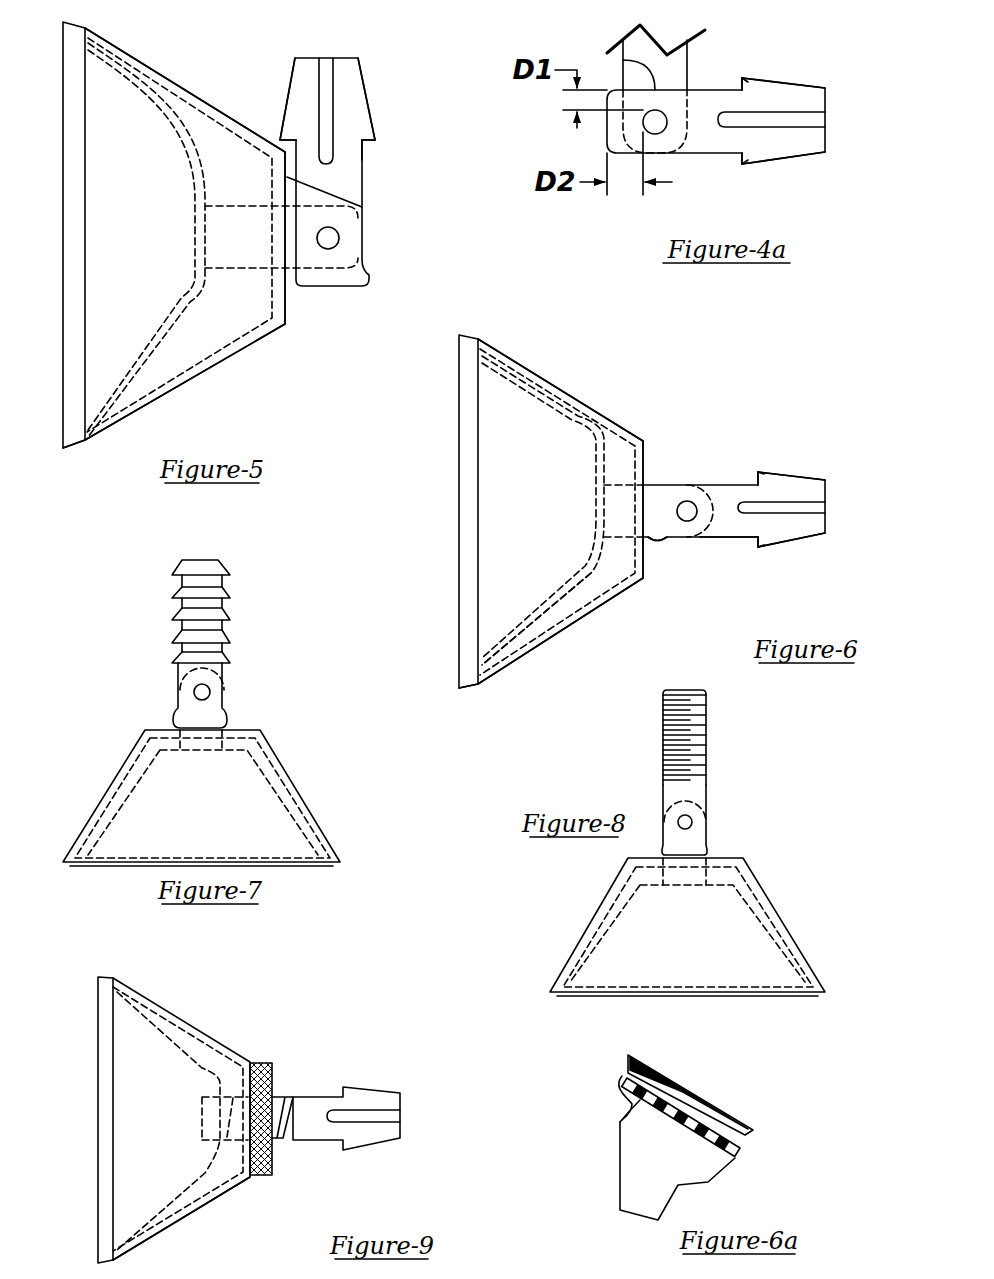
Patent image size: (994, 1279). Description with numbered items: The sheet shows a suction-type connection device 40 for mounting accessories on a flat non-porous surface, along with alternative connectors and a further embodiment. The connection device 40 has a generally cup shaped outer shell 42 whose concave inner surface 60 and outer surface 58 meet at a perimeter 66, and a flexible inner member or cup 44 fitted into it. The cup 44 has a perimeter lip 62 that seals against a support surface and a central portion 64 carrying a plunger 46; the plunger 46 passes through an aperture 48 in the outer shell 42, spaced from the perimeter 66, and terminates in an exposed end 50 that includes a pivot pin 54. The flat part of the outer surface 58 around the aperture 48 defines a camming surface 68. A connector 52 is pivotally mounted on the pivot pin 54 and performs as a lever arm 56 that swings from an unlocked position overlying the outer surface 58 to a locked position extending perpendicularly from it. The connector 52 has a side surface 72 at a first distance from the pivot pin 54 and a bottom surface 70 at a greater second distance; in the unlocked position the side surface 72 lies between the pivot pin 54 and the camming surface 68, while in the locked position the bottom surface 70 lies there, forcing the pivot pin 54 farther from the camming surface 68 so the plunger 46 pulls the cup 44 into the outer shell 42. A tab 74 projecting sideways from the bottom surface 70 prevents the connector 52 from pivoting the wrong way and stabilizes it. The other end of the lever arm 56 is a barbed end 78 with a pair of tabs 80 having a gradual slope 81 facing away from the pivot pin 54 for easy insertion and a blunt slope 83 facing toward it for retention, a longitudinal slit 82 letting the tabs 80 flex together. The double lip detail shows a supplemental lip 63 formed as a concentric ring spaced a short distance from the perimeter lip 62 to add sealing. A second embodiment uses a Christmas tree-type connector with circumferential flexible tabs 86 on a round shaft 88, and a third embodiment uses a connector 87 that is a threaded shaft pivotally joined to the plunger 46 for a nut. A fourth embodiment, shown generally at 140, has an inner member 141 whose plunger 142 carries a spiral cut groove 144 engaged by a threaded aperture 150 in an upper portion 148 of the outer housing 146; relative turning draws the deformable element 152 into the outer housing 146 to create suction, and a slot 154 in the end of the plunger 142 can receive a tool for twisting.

In FIG. 5, the connection device 40 is at (279, 405).
In FIG. 5, the outer shell 42 is at (169, 71).
In FIG. 6, the outer shell 42 is at (574, 391).
In FIG. 5, the flexible inner member or cup 44 is at (78, 295).
In FIG. 6, the flexible inner member or cup 44 is at (469, 533).
In FIG. 6A, the flexible inner member or cup 44 is at (706, 1160).
In FIG. 6, the plunger 46 is at (616, 484).
In FIG. 8, the plunger 46 is at (692, 863).
In FIG. 5, the aperture 48 is at (279, 287).
In FIG. 6, the aperture 48 is at (643, 442).
In FIG. 6, the exposed end 50 is at (706, 484).
In FIG. 5, the connector 52 is at (366, 195).
In FIG. 4A, the connector 52 is at (707, 124).
In FIG. 6, the connector 52 is at (728, 541).
In FIG. 5, the pivot pin 54 is at (343, 238).
In FIG. 6, the pivot pin 54 is at (680, 510).
In FIG. 6, the lever arm 56 is at (718, 538).
In FIG. 5, the outer surface 58 is at (189, 388).
In FIG. 6, the outer surface 58 is at (587, 617).
In FIG. 6A, the outer surface 58 is at (673, 1078).
In FIG. 6, the concave inner surface 60 is at (578, 413).
In FIG. 6A, the concave inner surface 60 is at (736, 1152).
In FIG. 5, the perimeter lip 62 is at (63, 448).
In FIG. 6, the perimeter lip 62 is at (462, 687).
In FIG. 6A, the perimeter lip 62 is at (620, 1079).
In FIG. 6A, the supplemental lip 63 is at (622, 1122).
In FIG. 5, the central portion 64 is at (197, 298).
In FIG. 6, the central portion 64 is at (594, 577).
In FIG. 5, the perimeter 66 is at (88, 26).
In FIG. 6, the perimeter 66 is at (467, 335).
In FIG. 6A, the perimeter 66 is at (628, 1062).
In FIG. 5, the camming surface 68 is at (360, 204).
In FIG. 6, the camming surface 68 is at (650, 563).
In FIG. 4A, the bottom surface 70 is at (605, 135).
In FIG. 4A, the side surface 72 is at (623, 60).
In FIG. 4A, the tab 74 is at (617, 160).
In FIG. 5, the barbed end 78 is at (377, 101).
In FIG. 4A, the barbed end 78 is at (786, 123).
In FIG. 6, the barbed end 78 is at (803, 470).
In FIG. 5, the tabs 80 is at (294, 120).
In FIG. 4A, the tabs 80 is at (752, 75).
In FIG. 6, the tabs 80 is at (761, 471).
In FIG. 5, the gradual slope 81 is at (291, 69).
In FIG. 4A, the gradual slope 81 is at (765, 77).
In FIG. 6, the gradual slope 81 is at (790, 472).
In FIG. 5, the longitudinal slit 82 is at (326, 62).
In FIG. 4A, the longitudinal slit 82 is at (818, 120).
In FIG. 6, the longitudinal slit 82 is at (820, 507).
In FIG. 5, the blunt slope 83 is at (369, 143).
In FIG. 4A, the blunt slope 83 is at (745, 78).
In FIG. 6, the blunt slope 83 is at (758, 473).
In FIG. 7, the circumferential flexible tabs 86 is at (205, 611).
In FIG. 8, the connector (threaded shaft) 87 is at (700, 730).
In FIG. 7, the round shaft 88 is at (185, 580).
In FIG. 9, the connection device 140 is at (299, 1028).
In FIG. 9, the inner member 141 is at (177, 1047).
In FIG. 9, the plunger 142 is at (311, 1097).
In FIG. 9, the spiral cut groove 144 is at (280, 1140).
In FIG. 9, the outer housing 146 is at (198, 1213).
In FIG. 9, the upper portion 148 is at (262, 1175).
In FIG. 9, the threaded aperture 150 is at (269, 1112).
In FIG. 9, the deformable element 152 is at (105, 1175).
In FIG. 9, the slot 154 is at (387, 1114).